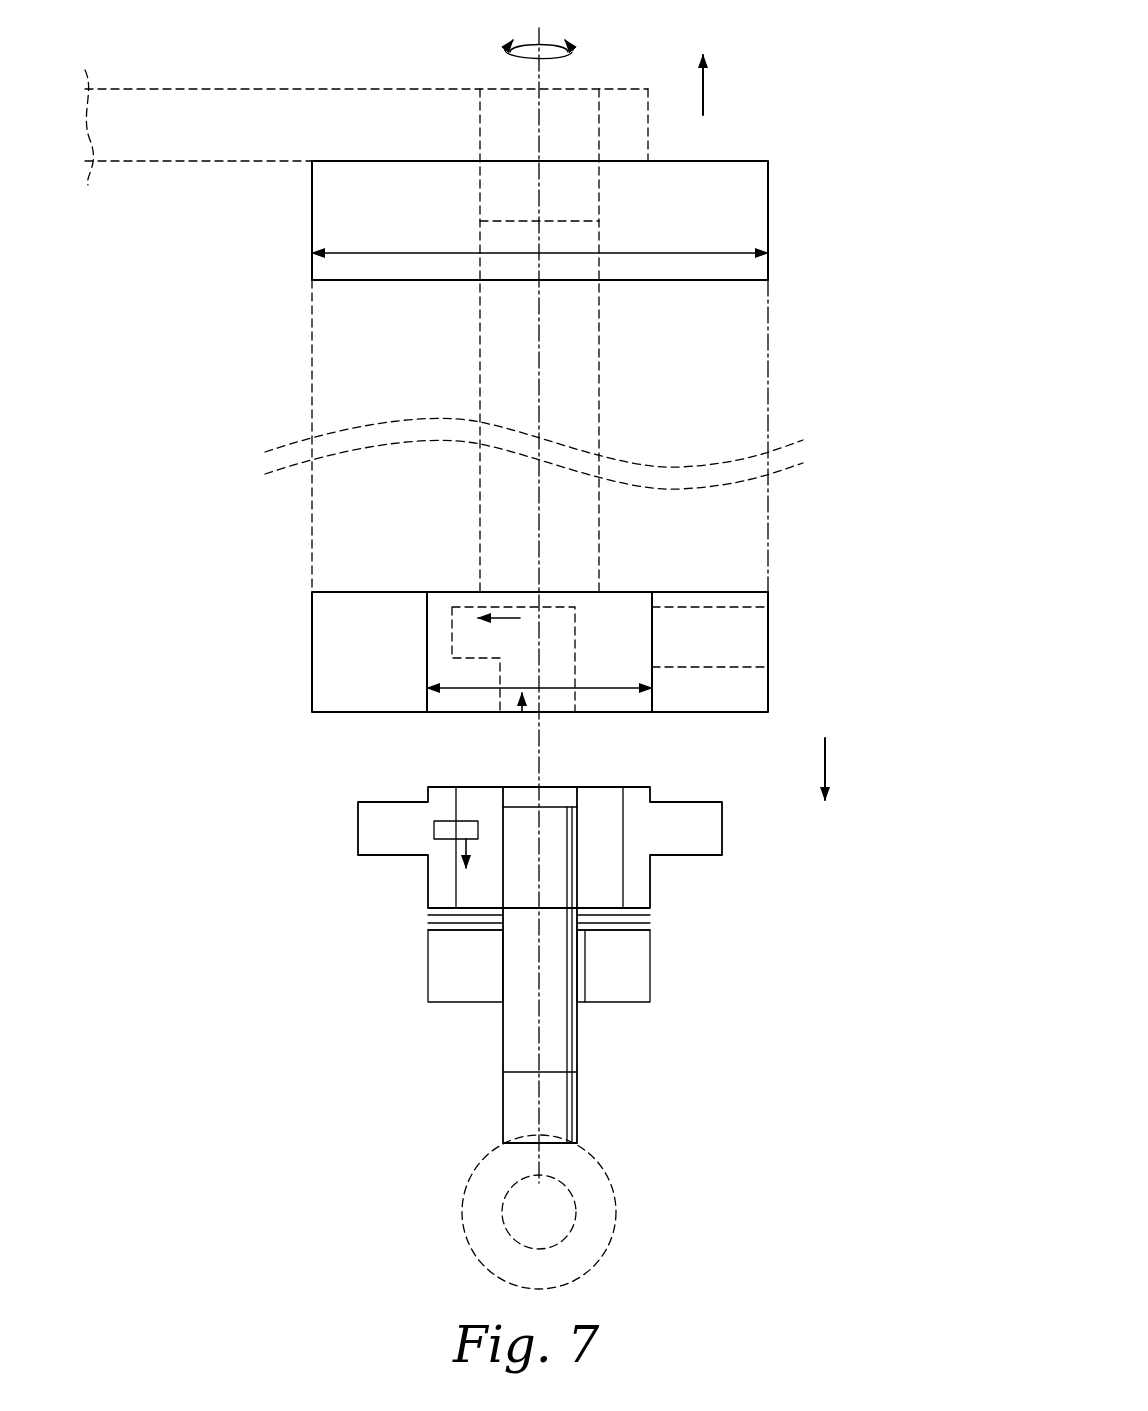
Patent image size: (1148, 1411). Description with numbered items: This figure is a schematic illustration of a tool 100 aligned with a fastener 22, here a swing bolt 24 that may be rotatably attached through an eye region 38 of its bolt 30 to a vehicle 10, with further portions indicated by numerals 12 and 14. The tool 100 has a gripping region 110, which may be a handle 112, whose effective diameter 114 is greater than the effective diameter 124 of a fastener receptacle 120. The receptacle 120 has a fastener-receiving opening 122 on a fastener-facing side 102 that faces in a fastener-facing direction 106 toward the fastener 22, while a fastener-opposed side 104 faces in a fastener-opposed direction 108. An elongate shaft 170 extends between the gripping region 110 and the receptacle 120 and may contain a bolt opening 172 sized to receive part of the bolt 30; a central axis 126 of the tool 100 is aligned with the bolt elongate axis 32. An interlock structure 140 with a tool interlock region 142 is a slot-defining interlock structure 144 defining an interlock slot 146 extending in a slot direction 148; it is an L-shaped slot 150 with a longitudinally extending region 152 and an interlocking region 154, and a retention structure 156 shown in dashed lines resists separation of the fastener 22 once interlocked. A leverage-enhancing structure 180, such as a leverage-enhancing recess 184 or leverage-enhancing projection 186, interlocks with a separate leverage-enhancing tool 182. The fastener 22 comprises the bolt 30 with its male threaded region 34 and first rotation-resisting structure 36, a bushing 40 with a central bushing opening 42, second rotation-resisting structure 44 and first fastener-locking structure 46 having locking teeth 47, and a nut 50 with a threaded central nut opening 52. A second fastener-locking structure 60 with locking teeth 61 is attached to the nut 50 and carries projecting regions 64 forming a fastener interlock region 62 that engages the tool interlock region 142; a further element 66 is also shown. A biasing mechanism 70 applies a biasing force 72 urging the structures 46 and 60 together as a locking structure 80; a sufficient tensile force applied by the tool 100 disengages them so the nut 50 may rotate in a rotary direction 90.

The vehicle 10 is at (883, 85).
The valve body portion 12 is at (900, 130).
The actuator portion 14 is at (905, 195).
The fastener 22 is at (218, 923).
The swing bolt 24 is at (235, 978).
The bolt 30 is at (504, 1102).
The bolt elongate axis 32 is at (540, 1095).
The male threaded region 34 is at (520, 1020).
The first rotation-resisting structure 36 is at (577, 1048).
The eye region 38 is at (616, 1222).
The bushing 40 is at (428, 962).
The central bushing opening 42 is at (503, 985).
The second rotation-resisting structure 44 is at (583, 968).
The first fastener-locking structure 46 is at (650, 928).
The first plurality of locking teeth 47 is at (428, 923).
The nut 50 is at (463, 787).
The threaded central nut opening 52 is at (577, 805).
The second fastener-locking structure 60 is at (650, 912).
The second plurality of locking teeth 61 is at (428, 911).
The fastener interlock region 62 is at (358, 830).
The projecting regions 64 is at (357, 845).
The housing side wall 66 is at (650, 885).
The biasing mechanism 70 is at (434, 832).
The biasing force 72 is at (483, 850).
The locking structure 80 is at (722, 952).
The rotary direction 90 is at (572, 52).
The tool 100 is at (125, 382).
The fastener-facing side 102 is at (705, 712).
The fastener-opposed side 104 is at (740, 161).
The fastener-facing direction 106 is at (825, 760).
The fastener-opposed direction 108 is at (703, 95).
The gripping region 110 is at (312, 180).
The handle 112 is at (312, 213).
The effective diameter of gripping region 114 is at (352, 253).
The fastener receptacle 120 is at (420, 660).
The fastener-receiving opening 122 is at (440, 718).
The effective diameter of fastener receptacle 124 is at (620, 700).
The central axis 126 is at (540, 490).
The interlock structure 140 is at (312, 665).
The tool interlock region 142 is at (312, 688).
The slot-defining interlock structure 144 is at (325, 700).
The interlock slot 146 is at (680, 607).
The slot direction 148 is at (507, 612).
The L-shaped slot 150 is at (472, 600).
The longitudinally extending region 152 is at (518, 712).
The interlocking region 154 is at (470, 637).
The retention structure 156 is at (427, 687).
The elongate shaft 170 is at (312, 338).
The bolt opening 172 is at (490, 360).
The leverage-enhancing structure 180 is at (480, 165).
The leverage-enhancing tool 182 is at (122, 160).
The leverage-enhancing recess 184 is at (480, 212).
The leverage-enhancing projection 186 is at (480, 125).